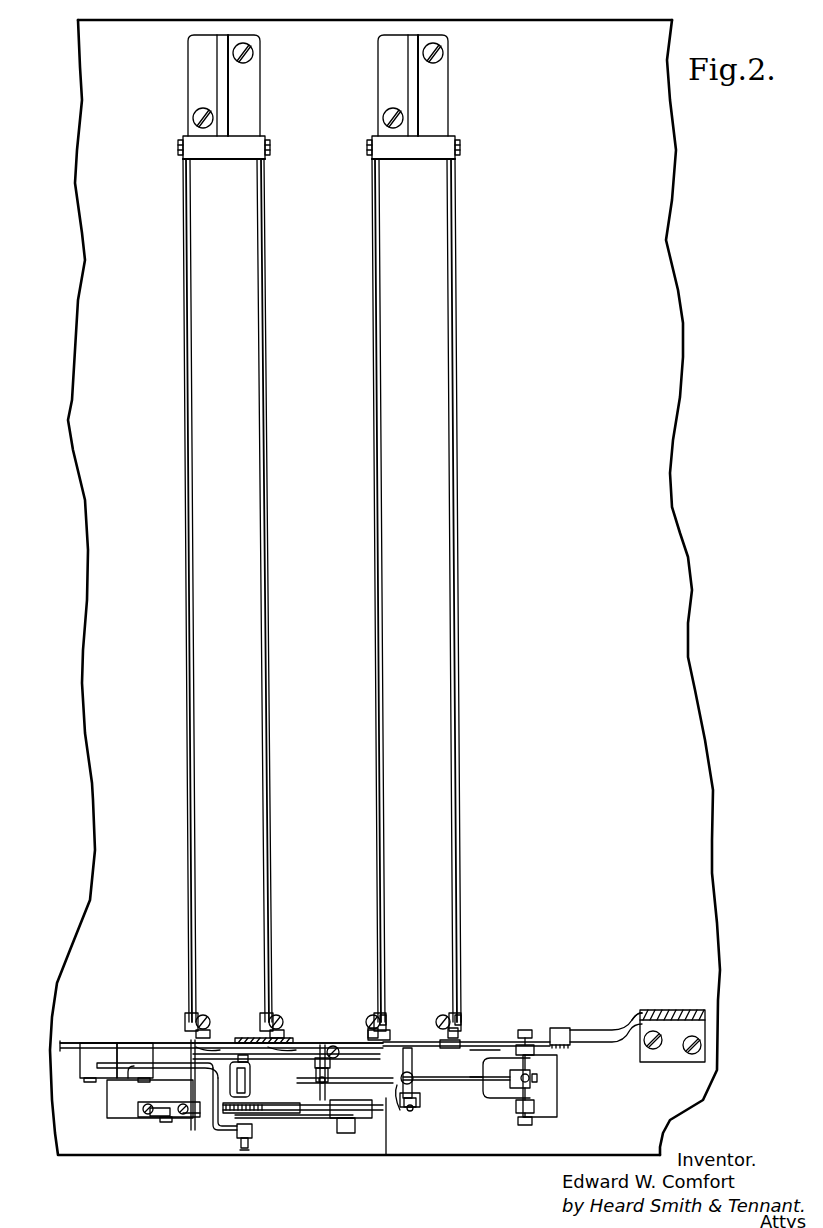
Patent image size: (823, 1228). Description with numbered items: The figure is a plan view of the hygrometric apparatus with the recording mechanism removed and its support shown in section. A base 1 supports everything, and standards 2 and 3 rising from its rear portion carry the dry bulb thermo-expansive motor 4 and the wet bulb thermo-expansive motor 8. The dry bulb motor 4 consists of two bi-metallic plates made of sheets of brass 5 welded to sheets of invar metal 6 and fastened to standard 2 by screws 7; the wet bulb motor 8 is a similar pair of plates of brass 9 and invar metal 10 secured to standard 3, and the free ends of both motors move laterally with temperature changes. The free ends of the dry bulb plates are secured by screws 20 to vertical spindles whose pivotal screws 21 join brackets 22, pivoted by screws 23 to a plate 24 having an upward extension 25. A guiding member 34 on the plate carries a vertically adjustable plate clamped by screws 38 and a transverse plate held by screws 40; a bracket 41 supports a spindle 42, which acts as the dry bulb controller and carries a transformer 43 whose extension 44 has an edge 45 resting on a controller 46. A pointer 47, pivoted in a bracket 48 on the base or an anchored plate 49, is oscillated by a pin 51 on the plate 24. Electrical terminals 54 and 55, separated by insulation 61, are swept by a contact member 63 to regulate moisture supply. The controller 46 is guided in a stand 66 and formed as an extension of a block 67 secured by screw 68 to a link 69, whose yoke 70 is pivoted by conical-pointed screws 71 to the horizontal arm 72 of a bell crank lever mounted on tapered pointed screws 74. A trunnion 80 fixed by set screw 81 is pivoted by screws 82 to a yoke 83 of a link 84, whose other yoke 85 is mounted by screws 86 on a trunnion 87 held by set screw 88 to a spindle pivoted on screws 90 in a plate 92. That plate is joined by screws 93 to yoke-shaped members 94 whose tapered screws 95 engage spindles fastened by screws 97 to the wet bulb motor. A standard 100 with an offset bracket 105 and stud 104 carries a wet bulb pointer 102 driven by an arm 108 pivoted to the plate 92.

The base 1 is at (680, 553).
The standard 2 is at (250, 103).
The standard 3 is at (440, 103).
The dry bulb thermo-expansive motor 4 is at (223, 590).
The sheet of brass 5 is at (192, 412).
The sheet of invar metal 6 is at (184, 450).
The screw 7 is at (177, 146).
The wet bulb thermo-expansive motor 8 is at (416, 590).
The sheet of brass 9 is at (448, 418).
The sheet of invar metal 10 is at (377, 433).
The screw 20 is at (187, 1013).
The pivotal screw 21 is at (206, 1016).
The bracket 22 is at (211, 1033).
The screw 23 is at (205, 1045).
The plate 24 is at (190, 1042).
The upward extension 25 is at (295, 1042).
The guiding member 34 is at (62, 1044).
The clamping screw 38 is at (215, 1048).
The screw 40 is at (251, 1076).
The bracket 41 is at (212, 1128).
The spindle 42 is at (253, 1133).
The transformer 43 is at (231, 1113).
The extension 44 is at (294, 1111).
The edge 45 is at (335, 1120).
The controller 46 is at (321, 1119).
The pointer 47 is at (160, 1118).
The bracket 48 is at (140, 1110).
The plate 49 is at (107, 1100).
The pin 51 is at (191, 1082).
The electrical terminal 54 is at (130, 1060).
The electrical terminal 55 is at (97, 1058).
The insulation 61 is at (97, 1066).
The contact member 63 is at (128, 1076).
The stand 66 is at (350, 1134).
The block 67 is at (329, 1073).
The screw 68 is at (339, 1053).
The link 69 is at (318, 1083).
The yoke 70 is at (316, 1063).
The conical-pointed screw 71 is at (325, 1050).
The horizontal arm 72 is at (388, 1100).
The tapered pointed screw 74 is at (530, 1033).
The trunnion 80 is at (532, 1072).
The set screw 81 is at (535, 1080).
The tapered pointed screw 82 is at (535, 1050).
The yoke 83 is at (484, 1066).
The link 84 is at (477, 1081).
The yoke 85 is at (420, 1100).
The tapered screw 86 is at (413, 1108).
The trunnion 87 is at (398, 1090).
The set screw 88 is at (405, 1075).
The tapered screw 90 is at (420, 1078).
The plate 92 is at (457, 1042).
The screw 93 is at (372, 1035).
The yoke-shaped member 94 is at (380, 1032).
The tapered screw 95 is at (380, 1020).
The screw 97 is at (386, 1018).
The standard 100 is at (678, 1010).
The pointer 102 is at (598, 1030).
The stud 104 is at (562, 1030).
The bracket 105 is at (638, 1012).
The arm 108 is at (490, 1049).